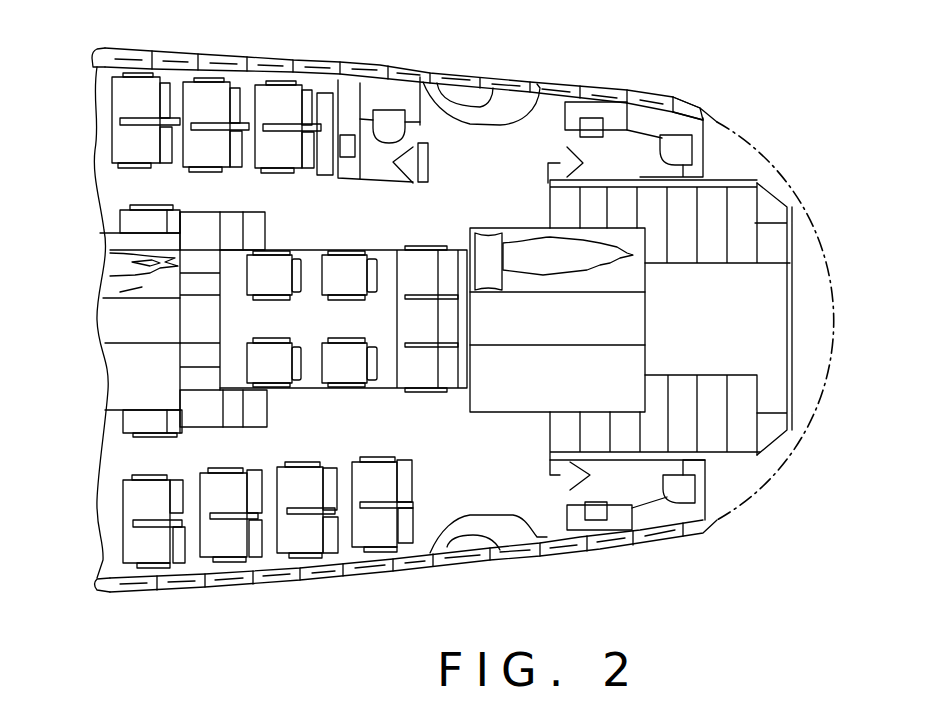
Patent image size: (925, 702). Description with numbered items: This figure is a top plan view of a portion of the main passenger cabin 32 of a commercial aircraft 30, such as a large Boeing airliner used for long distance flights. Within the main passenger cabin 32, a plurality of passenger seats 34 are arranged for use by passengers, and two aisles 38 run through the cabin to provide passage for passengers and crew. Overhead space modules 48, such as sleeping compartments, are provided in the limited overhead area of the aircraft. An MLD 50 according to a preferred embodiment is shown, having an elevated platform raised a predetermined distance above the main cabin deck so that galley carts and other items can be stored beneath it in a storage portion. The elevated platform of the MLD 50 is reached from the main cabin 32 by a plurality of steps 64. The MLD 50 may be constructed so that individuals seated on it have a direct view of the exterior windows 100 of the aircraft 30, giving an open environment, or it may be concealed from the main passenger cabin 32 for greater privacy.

The aircraft 30 is at (737, 108).
The main passenger cabin 32 is at (490, 177).
The passenger seats 34 is at (140, 100).
The aisles 38 is at (188, 183).
The overhead space modules 48 is at (143, 287).
The MLD 50 is at (315, 388).
The steps 64 is at (267, 232).
The exterior windows 100 is at (368, 62).